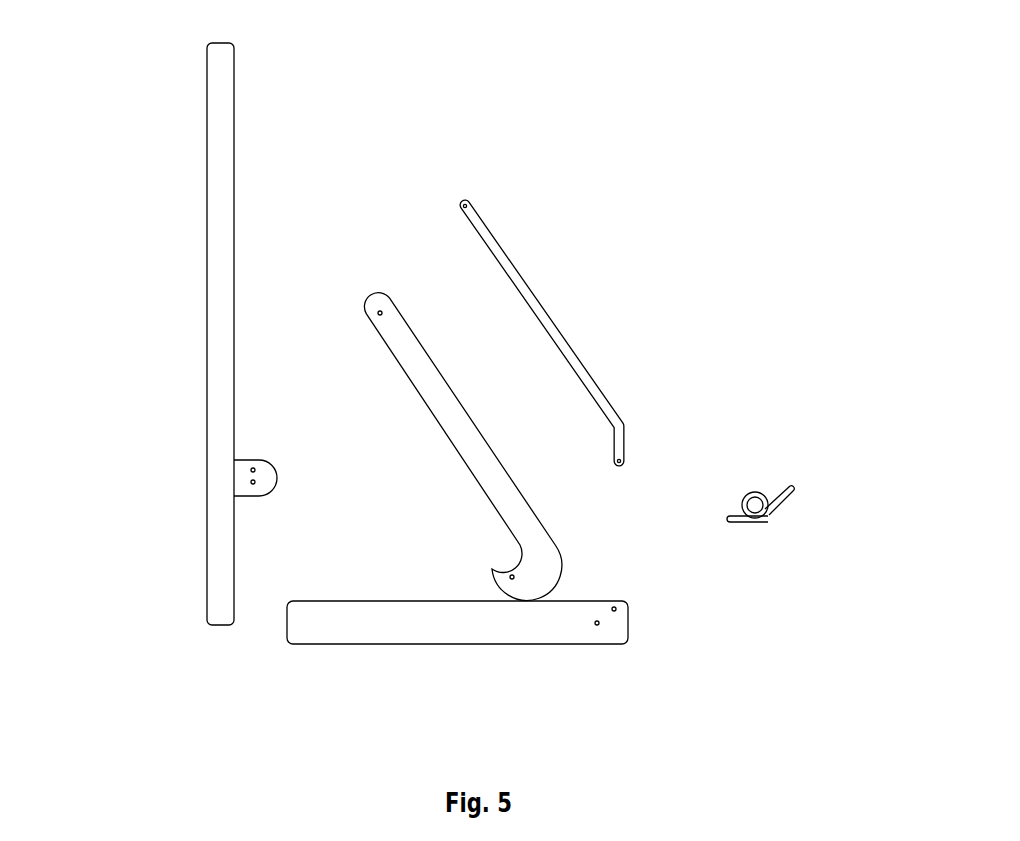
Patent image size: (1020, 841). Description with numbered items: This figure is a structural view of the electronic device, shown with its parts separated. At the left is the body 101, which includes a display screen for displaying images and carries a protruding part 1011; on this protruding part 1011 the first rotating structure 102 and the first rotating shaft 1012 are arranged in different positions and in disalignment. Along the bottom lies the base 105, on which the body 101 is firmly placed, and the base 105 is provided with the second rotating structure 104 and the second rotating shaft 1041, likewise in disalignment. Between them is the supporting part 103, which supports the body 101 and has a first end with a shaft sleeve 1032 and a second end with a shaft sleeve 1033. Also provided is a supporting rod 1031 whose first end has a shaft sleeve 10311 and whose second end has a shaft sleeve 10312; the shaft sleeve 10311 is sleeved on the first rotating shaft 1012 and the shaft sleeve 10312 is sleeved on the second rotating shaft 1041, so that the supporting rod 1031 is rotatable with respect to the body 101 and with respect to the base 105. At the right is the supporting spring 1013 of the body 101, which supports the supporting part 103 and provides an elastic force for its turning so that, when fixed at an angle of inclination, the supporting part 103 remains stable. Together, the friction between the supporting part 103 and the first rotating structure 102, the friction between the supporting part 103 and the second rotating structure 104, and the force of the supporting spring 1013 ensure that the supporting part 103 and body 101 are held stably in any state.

The body 101 is at (207, 115).
The protruding part 1011 is at (250, 480).
The first rotating shaft 1012 is at (257, 465).
The first rotating structure 102 is at (260, 493).
The supporting part 103 is at (445, 407).
The supporting rod 1031 is at (535, 300).
The shaft sleeve 10311 is at (468, 204).
The shaft sleeve 10312 is at (623, 457).
The shaft sleeve 1032 is at (380, 313).
The shaft sleeve 1033 is at (512, 577).
The supporting spring 1013 is at (750, 490).
The second rotating structure 104 is at (597, 623).
The second rotating shaft 1041 is at (614, 608).
The base 105 is at (467, 628).